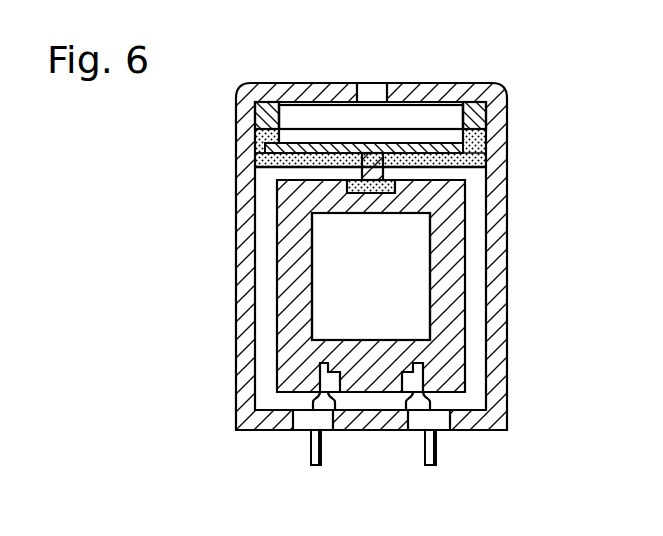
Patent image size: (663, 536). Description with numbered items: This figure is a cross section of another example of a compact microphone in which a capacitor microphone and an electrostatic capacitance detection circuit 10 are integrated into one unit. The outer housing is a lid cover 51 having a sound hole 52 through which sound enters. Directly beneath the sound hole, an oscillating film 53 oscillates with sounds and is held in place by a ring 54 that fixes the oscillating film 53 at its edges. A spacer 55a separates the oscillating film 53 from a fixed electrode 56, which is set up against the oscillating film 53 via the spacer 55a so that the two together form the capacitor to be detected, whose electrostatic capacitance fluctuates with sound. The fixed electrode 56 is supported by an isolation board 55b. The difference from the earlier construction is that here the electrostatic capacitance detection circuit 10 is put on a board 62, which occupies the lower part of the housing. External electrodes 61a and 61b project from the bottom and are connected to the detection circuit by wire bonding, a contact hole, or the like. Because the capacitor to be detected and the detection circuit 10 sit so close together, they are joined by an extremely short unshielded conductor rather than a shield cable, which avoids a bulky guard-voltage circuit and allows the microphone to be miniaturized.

The electrostatic capacitance detection circuit 10 is at (402, 245).
The lid cover 51 is at (434, 90).
The sound hole 52 is at (367, 102).
The oscillating film 53 is at (322, 127).
The ring 54 is at (483, 104).
The spacer 55a is at (483, 132).
The isolation board 55b is at (483, 165).
The fixed electrode 56 is at (262, 146).
The external electrode 61a is at (308, 448).
The external electrode 61b is at (437, 448).
The board 62 is at (447, 280).